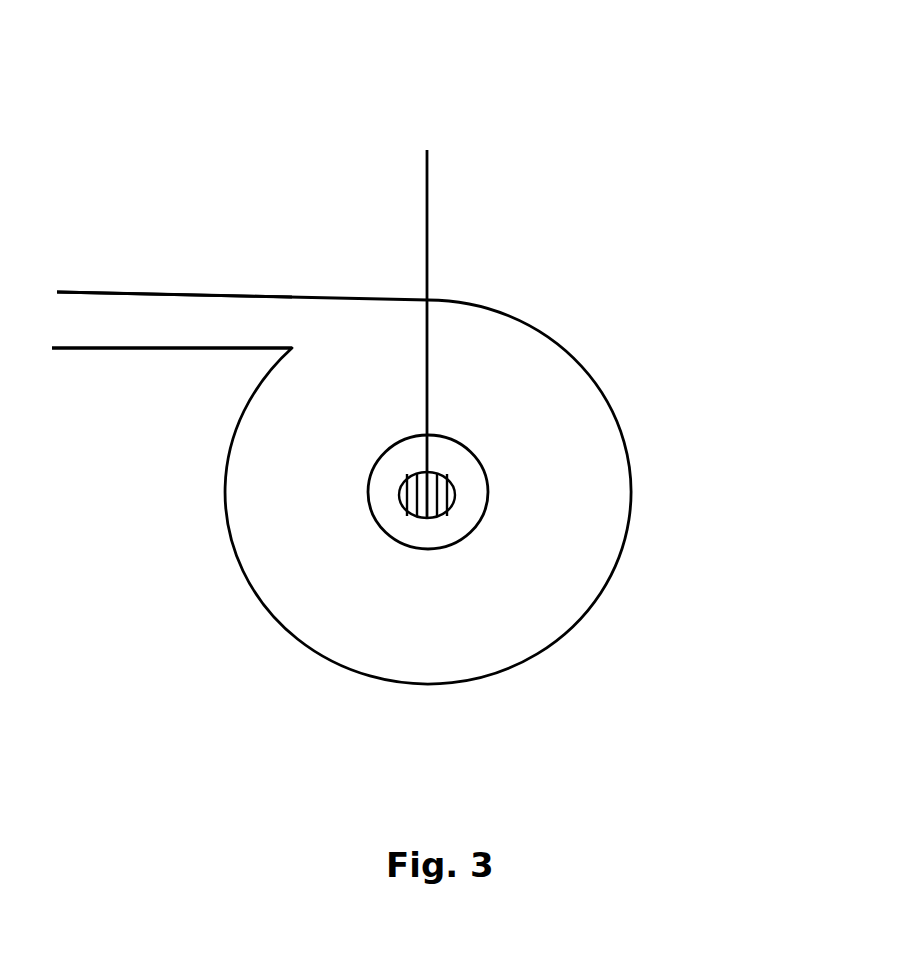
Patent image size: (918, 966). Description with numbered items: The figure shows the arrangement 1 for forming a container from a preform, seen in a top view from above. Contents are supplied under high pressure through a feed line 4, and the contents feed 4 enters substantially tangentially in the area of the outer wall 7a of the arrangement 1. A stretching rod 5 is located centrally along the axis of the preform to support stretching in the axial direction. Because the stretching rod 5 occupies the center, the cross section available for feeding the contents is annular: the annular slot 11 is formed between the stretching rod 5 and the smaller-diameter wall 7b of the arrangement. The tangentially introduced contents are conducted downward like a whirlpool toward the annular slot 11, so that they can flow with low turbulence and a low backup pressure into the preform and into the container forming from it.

The centrifugal separator / fan device 1 is at (535, 149).
The feed line 4 is at (128, 317).
The stretching rod 5 is at (426, 314).
The wall of the arrangement 7a is at (622, 442).
The wall of the arrangement 7b is at (478, 527).
The annular slot 11 is at (463, 467).